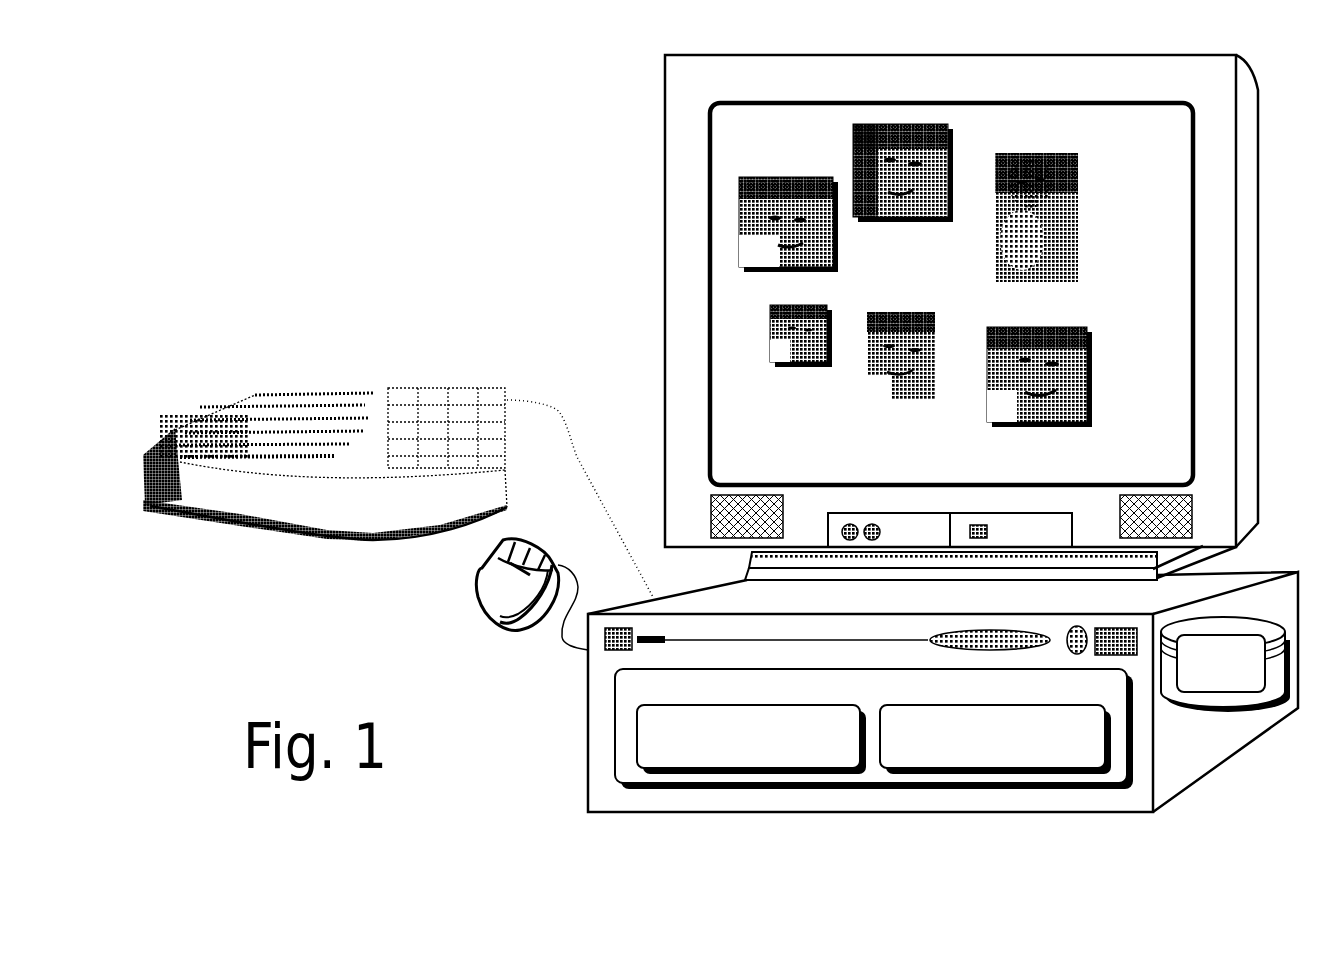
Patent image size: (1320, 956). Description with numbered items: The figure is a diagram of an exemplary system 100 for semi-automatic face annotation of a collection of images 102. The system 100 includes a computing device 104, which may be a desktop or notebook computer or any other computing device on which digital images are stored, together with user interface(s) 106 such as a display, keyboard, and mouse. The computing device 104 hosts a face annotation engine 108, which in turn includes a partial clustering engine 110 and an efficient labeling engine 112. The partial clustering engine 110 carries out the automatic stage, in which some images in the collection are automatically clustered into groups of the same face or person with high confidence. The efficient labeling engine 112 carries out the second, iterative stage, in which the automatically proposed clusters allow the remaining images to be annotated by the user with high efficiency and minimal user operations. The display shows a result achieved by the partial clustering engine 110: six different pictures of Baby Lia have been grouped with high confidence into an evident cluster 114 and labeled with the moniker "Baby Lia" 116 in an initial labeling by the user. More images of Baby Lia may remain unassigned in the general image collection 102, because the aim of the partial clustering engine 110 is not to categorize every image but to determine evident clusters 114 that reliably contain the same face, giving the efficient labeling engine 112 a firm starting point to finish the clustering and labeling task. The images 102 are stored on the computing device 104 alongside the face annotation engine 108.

The exemplary system 100 is at (452, 97).
The collection of images 102 is at (1238, 686).
The computing device 104 is at (588, 733).
The user interface(s) 106 is at (650, 467).
The face annotation engine 108 is at (1008, 699).
The partial clustering engine 110 is at (802, 760).
The efficient labeling engine 112 is at (1047, 759).
The evident cluster 114 is at (758, 153).
The moniker 116 is at (760, 370).